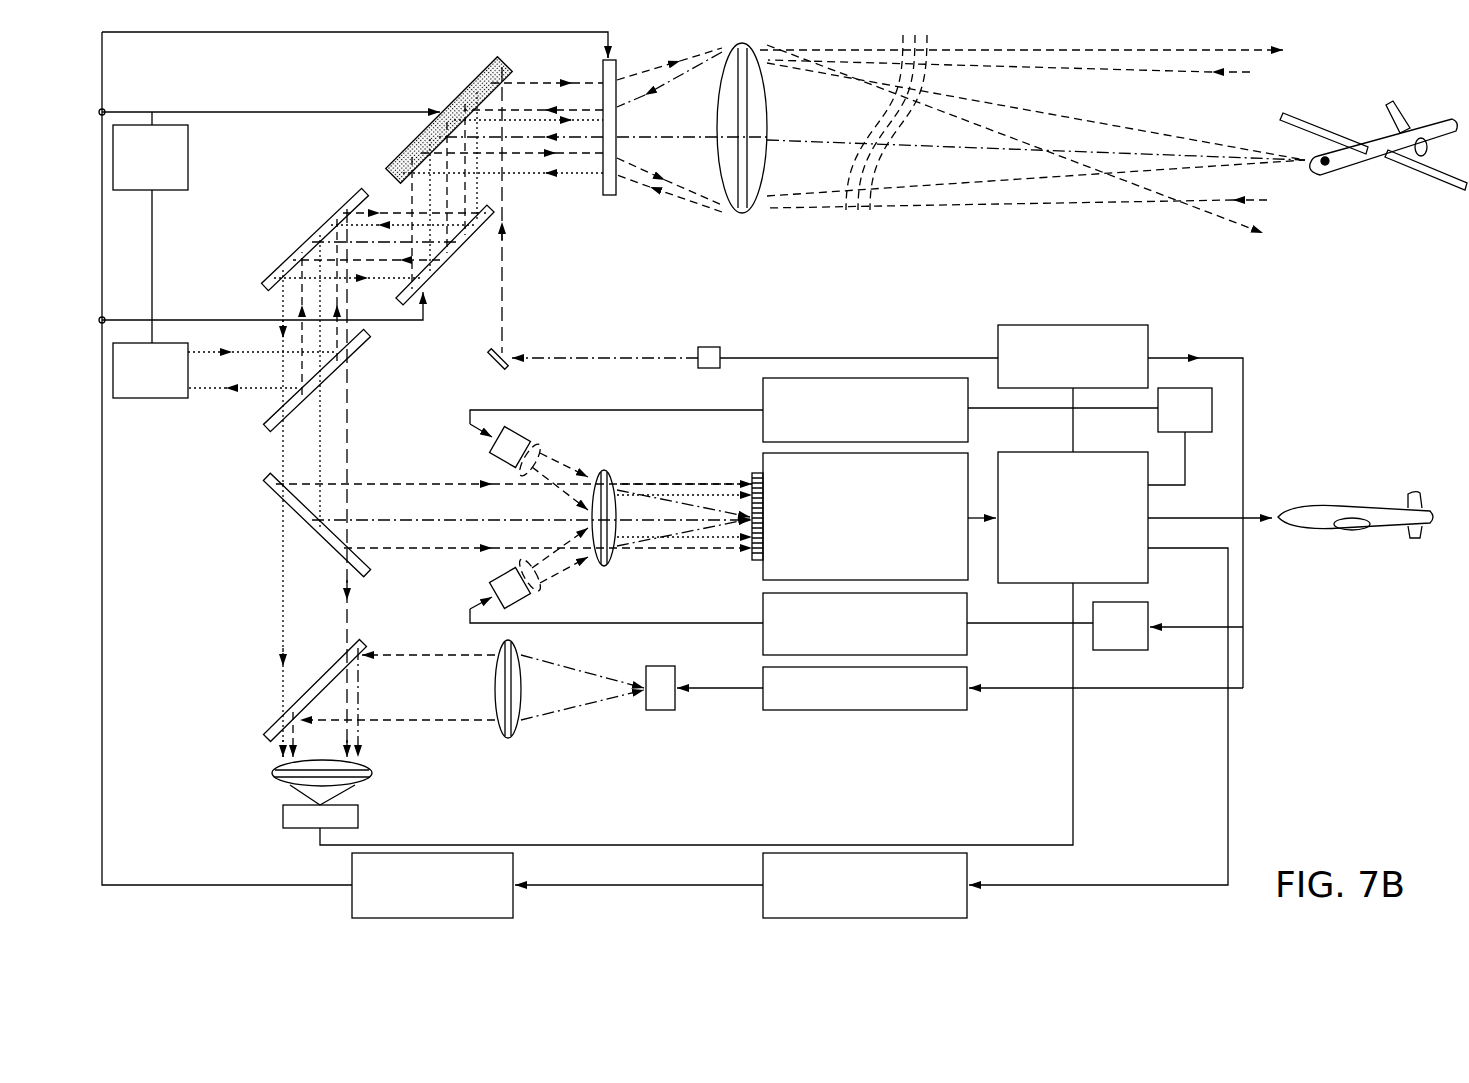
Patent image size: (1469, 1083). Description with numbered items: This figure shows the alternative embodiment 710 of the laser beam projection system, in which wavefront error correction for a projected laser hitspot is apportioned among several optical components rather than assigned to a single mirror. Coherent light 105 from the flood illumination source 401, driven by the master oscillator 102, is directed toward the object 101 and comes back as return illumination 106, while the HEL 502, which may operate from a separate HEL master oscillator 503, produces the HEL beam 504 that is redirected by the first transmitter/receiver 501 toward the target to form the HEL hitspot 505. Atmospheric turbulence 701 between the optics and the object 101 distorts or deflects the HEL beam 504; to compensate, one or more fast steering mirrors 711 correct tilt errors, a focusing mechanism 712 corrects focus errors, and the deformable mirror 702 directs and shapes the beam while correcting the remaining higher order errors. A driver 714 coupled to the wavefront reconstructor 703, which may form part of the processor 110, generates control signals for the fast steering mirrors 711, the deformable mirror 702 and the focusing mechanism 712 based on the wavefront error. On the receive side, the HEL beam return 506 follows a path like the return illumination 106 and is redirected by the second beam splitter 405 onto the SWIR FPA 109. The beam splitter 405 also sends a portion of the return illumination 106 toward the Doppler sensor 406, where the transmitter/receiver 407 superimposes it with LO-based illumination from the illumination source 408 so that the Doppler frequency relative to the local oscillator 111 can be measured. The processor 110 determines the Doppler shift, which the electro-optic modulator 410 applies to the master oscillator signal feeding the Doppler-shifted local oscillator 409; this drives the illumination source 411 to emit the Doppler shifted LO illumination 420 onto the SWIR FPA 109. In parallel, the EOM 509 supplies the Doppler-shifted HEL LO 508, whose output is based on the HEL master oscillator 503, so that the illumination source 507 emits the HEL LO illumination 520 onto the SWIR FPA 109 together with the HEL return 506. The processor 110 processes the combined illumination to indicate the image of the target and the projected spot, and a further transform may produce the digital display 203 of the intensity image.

The object 101 is at (1372, 176).
The master oscillator 102 is at (1095, 323).
The coherent light 105 is at (1218, 220).
The return illumination 106 is at (1035, 202).
The SWIR FPA 109 is at (842, 561).
The processor 110 is at (1052, 558).
The local oscillator 111 is at (865, 712).
The digital display 203 is at (1347, 530).
The flood illumination source 401 is at (708, 345).
The second beam splitter 405 is at (267, 500).
The Doppler sensor 406 is at (278, 817).
The transmitter/receiver 407 is at (265, 740).
The illumination source 408 is at (660, 712).
The Doppler-shifted local oscillator 409 is at (968, 635).
The electro-optic modulator 410 is at (1150, 645).
The illumination source 411 is at (488, 572).
The Doppler shifted LO illumination 420 is at (540, 588).
The first transmitter/receiver 501 is at (290, 255).
The HEL 502 is at (140, 400).
The HEL master oscillator 503 is at (190, 158).
The HEL beam 504 is at (1167, 130).
The HEL hitspot 505 is at (1327, 175).
The HEL beam return 506 is at (780, 137).
The illumination source 507 is at (478, 470).
The Doppler-shifted HEL LO 508 is at (970, 413).
The EOM 509 is at (1200, 433).
The HEL LO illumination 520 is at (440, 484).
The atmospheric turbulence 701 is at (852, 222).
The deformable mirror 702 is at (452, 98).
The wavefront reconstructor 703 is at (967, 893).
The alternative embodiment 710 is at (1298, 774).
The fast steering mirror 711 is at (442, 265).
The focusing mechanism 712 is at (602, 70).
The driver 714 is at (350, 897).